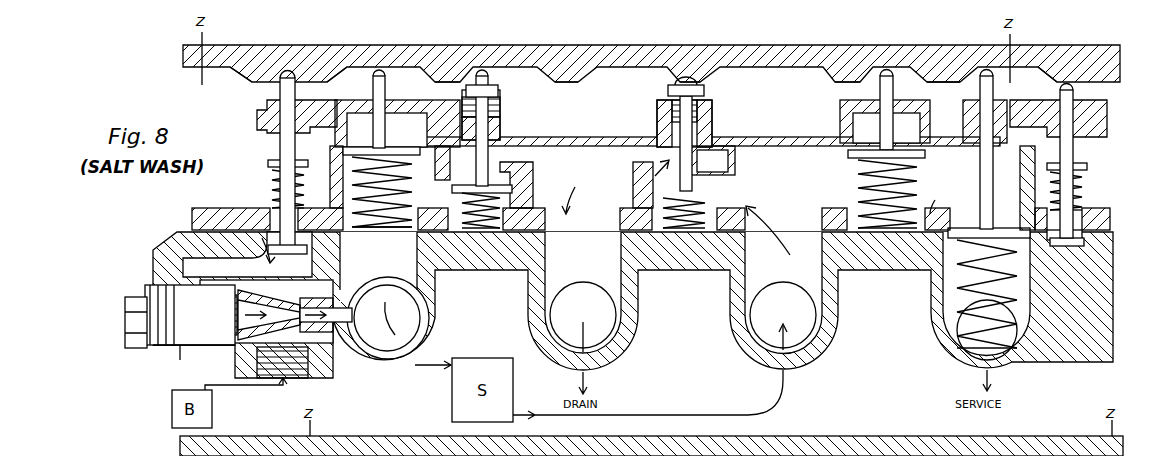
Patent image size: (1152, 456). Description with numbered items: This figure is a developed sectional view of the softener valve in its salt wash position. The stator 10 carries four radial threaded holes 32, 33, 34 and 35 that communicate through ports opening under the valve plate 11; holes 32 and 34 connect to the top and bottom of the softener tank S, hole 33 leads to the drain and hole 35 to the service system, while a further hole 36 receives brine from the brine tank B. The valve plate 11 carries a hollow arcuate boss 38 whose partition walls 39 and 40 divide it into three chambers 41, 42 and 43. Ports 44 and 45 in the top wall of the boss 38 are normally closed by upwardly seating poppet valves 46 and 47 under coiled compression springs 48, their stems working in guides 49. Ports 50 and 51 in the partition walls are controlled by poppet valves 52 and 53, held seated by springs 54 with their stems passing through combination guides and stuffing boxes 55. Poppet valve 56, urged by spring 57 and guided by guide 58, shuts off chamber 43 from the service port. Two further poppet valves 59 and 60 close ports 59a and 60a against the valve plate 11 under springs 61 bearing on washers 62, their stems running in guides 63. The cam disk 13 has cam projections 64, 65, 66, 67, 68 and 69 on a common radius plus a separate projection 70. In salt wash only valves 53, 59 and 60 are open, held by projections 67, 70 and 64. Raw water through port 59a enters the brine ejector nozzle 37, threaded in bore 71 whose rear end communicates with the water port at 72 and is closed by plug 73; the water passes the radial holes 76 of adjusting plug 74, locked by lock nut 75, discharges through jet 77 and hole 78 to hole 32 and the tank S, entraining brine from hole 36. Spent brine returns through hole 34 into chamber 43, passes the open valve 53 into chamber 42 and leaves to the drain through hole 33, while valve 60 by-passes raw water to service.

The stator 10 is at (508, 262).
The valve plate 11 is at (200, 208).
The cam disk 13 is at (650, 46).
The threaded hole 32 is at (422, 319).
The threaded hole 33 is at (614, 325).
The threaded hole 34 is at (814, 322).
The threaded hole 35 is at (960, 320).
The threaded hole 36 is at (298, 378).
The brine ejector nozzle 37 is at (275, 300).
The hollow arcuate boss 38 is at (580, 137).
The partition wall 39 is at (534, 182).
The partition wall 40 is at (632, 183).
The chamber 41 is at (393, 192).
The chamber 42 is at (590, 160).
The chamber 43 is at (810, 171).
The port 44 is at (420, 128).
The port 45 is at (845, 125).
The poppet valve 46 is at (332, 148).
The poppet valve 47 is at (926, 156).
The coiled compression spring 48 is at (275, 175).
The guide 49 is at (368, 100).
The port 50 is at (515, 168).
The port 51 is at (712, 160).
The poppet valve 52 is at (456, 190).
The poppet valve 53 is at (714, 194).
The coiled compression spring 54 is at (474, 226).
The combination valve stem guide and stuffing box 55 is at (502, 110).
The poppet valve 56 is at (1000, 228).
The spring 57 is at (960, 300).
The guide 58 is at (963, 122).
The poppet valve 59 is at (310, 252).
The port 59a is at (268, 208).
The poppet valve 60 is at (1067, 246).
The port 60a is at (1080, 206).
The coiled compression spring 61 is at (268, 170).
The washer 62 is at (1082, 163).
The guide 63 is at (262, 130).
The cam projection 64 is at (320, 80).
The cam projection 65 is at (453, 80).
The cam projection 66 is at (570, 80).
The cam projection 67 is at (700, 78).
The cam projection 68 is at (855, 80).
The cam projection 69 is at (942, 80).
The cam projection 70 is at (280, 76).
The bore 71 is at (240, 340).
The communication 72 is at (150, 285).
The plug 73 is at (135, 348).
The adjusting plug 74 is at (172, 352).
The lock nut 75 is at (200, 350).
The radial hole 76 is at (210, 306).
The jet 77 is at (303, 330).
The hole 78 is at (330, 345).